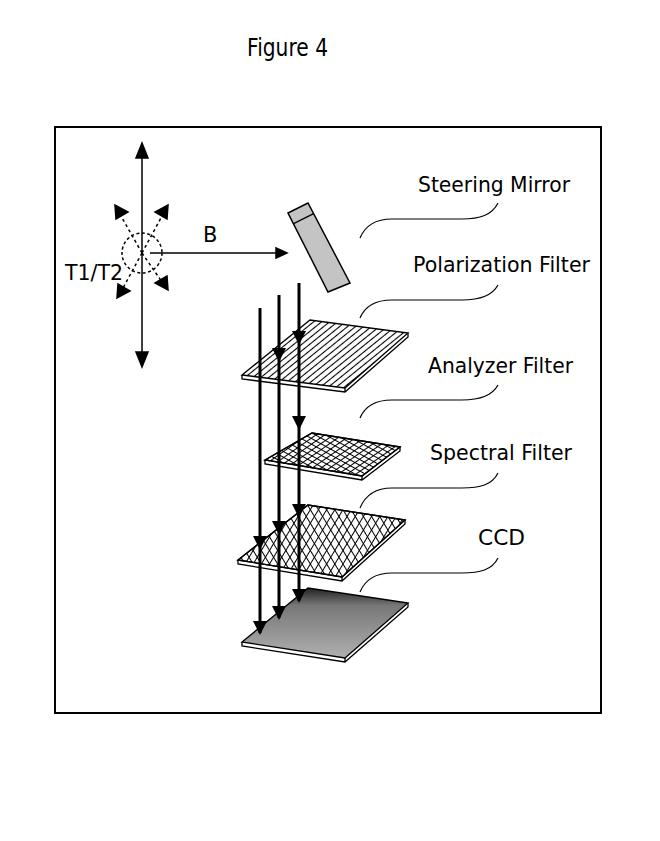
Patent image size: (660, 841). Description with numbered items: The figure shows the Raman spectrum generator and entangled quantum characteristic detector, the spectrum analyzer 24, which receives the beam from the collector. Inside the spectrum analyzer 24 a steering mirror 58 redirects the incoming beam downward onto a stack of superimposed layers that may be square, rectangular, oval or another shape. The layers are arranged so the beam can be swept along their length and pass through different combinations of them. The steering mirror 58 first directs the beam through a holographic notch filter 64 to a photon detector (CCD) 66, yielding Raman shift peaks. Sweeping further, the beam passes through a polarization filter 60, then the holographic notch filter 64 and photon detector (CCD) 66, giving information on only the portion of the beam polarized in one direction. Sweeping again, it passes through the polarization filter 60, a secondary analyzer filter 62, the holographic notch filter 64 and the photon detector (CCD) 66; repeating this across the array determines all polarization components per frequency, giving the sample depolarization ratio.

The spectrum analyzer 24 is at (328, 406).
The steering mirror 58 is at (321, 247).
The polarization filter 60 is at (300, 356).
The analyzer filter 62 is at (296, 456).
The holographic notch filter 64 is at (298, 543).
The photon detector (CCD) 66 is at (300, 625).